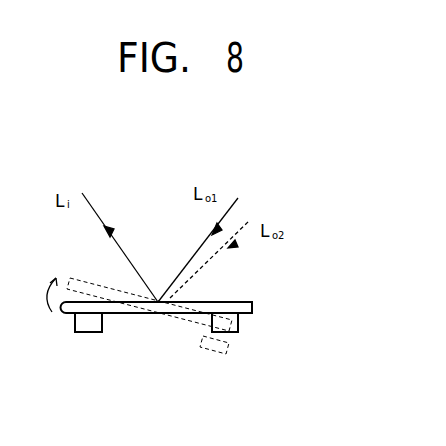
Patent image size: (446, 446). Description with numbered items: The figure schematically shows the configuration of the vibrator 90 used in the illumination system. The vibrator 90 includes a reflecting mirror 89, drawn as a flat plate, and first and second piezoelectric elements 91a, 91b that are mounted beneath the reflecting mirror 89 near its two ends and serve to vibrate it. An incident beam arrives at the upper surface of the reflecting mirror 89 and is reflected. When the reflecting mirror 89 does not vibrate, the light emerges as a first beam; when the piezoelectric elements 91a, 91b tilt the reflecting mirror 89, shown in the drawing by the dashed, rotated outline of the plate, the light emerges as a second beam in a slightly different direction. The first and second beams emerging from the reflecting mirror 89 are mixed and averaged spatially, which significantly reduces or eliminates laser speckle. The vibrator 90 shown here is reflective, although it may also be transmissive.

The reflecting mirror 89 is at (242, 302).
The vibrator 90 is at (273, 312).
The first piezoelectric element 91a is at (87, 333).
The second piezoelectric element 91b is at (232, 333).